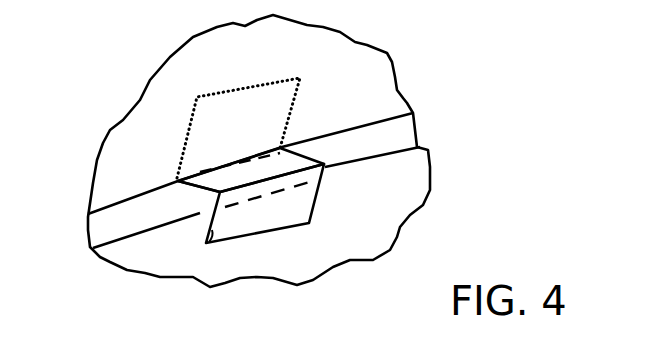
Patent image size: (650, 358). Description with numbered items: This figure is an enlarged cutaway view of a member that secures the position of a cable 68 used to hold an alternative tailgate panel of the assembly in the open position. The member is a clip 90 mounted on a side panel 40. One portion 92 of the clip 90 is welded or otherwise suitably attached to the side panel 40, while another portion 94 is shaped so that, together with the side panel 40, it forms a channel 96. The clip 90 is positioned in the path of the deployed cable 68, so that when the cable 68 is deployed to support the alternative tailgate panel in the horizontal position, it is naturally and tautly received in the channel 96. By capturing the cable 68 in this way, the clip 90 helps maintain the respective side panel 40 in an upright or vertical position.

The side panel 40 is at (345, 55).
The cable 68 is at (378, 135).
The clip 90 is at (315, 205).
The portion 92 is at (262, 134).
The another portion 94 is at (206, 243).
The channel 96 is at (205, 207).